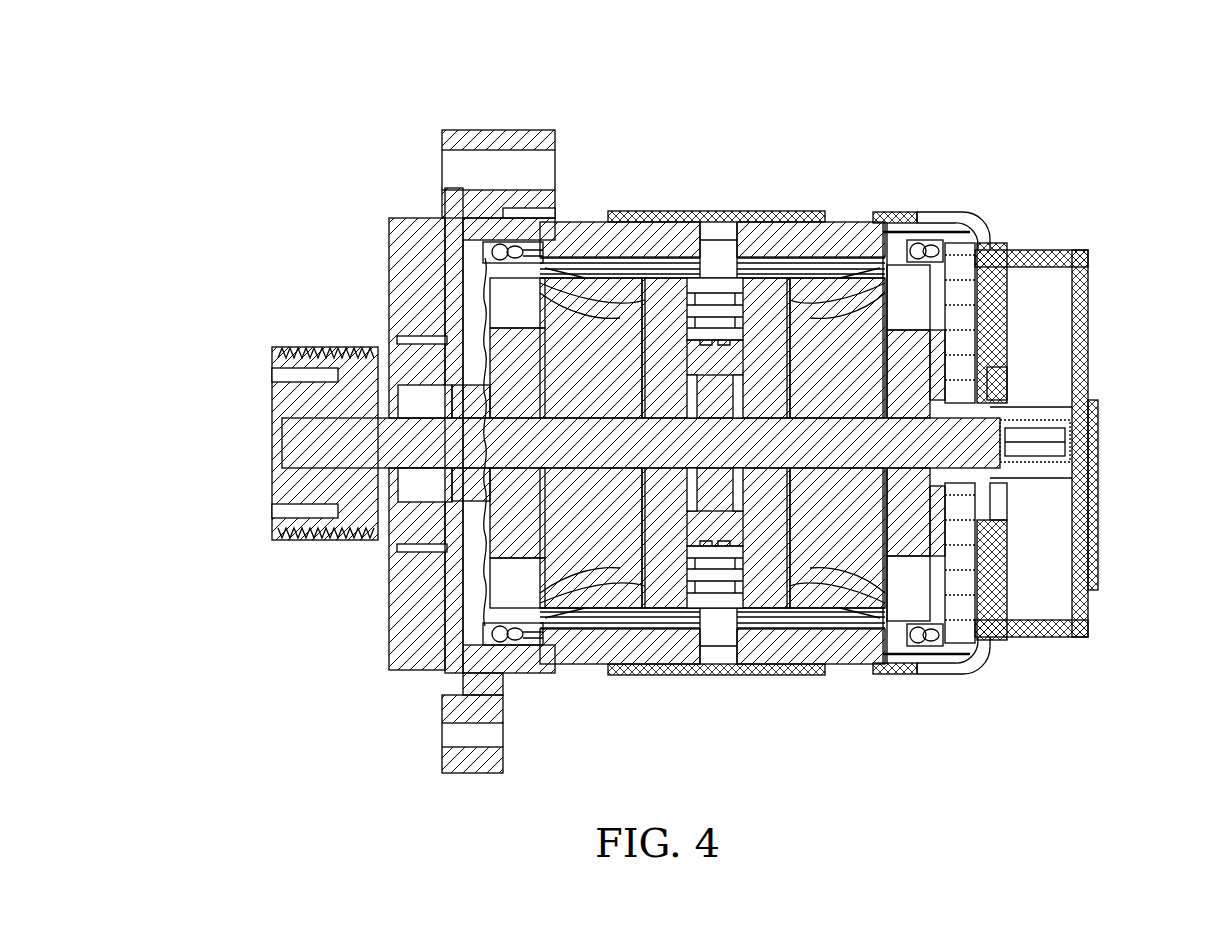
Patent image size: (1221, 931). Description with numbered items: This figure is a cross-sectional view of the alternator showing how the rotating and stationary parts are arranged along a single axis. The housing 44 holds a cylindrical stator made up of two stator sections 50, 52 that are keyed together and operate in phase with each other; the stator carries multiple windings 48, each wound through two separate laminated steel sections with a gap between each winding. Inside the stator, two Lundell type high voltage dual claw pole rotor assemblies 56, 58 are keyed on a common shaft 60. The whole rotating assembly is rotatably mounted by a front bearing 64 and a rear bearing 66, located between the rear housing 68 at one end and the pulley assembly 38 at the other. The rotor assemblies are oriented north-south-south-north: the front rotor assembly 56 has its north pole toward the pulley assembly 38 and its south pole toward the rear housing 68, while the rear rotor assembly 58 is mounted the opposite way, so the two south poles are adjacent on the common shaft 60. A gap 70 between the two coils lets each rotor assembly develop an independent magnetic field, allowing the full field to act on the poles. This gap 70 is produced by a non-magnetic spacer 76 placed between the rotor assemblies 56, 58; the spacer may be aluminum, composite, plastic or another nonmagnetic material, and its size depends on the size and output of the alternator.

The pulley assembly 38 is at (268, 345).
The housing 44 is at (659, 203).
The windings 48 is at (480, 257).
The stator section 50 is at (605, 237).
The stator section 52 is at (790, 245).
The rotor assembly 56 is at (588, 523).
The rotor assembly 58 is at (838, 527).
The common shaft 60 is at (388, 447).
The front bearing 64 is at (465, 480).
The rear bearing 66 is at (957, 400).
The rear housing 68 is at (955, 222).
The gap 70 is at (716, 298).
The non-magnetic spacer 76 is at (715, 533).